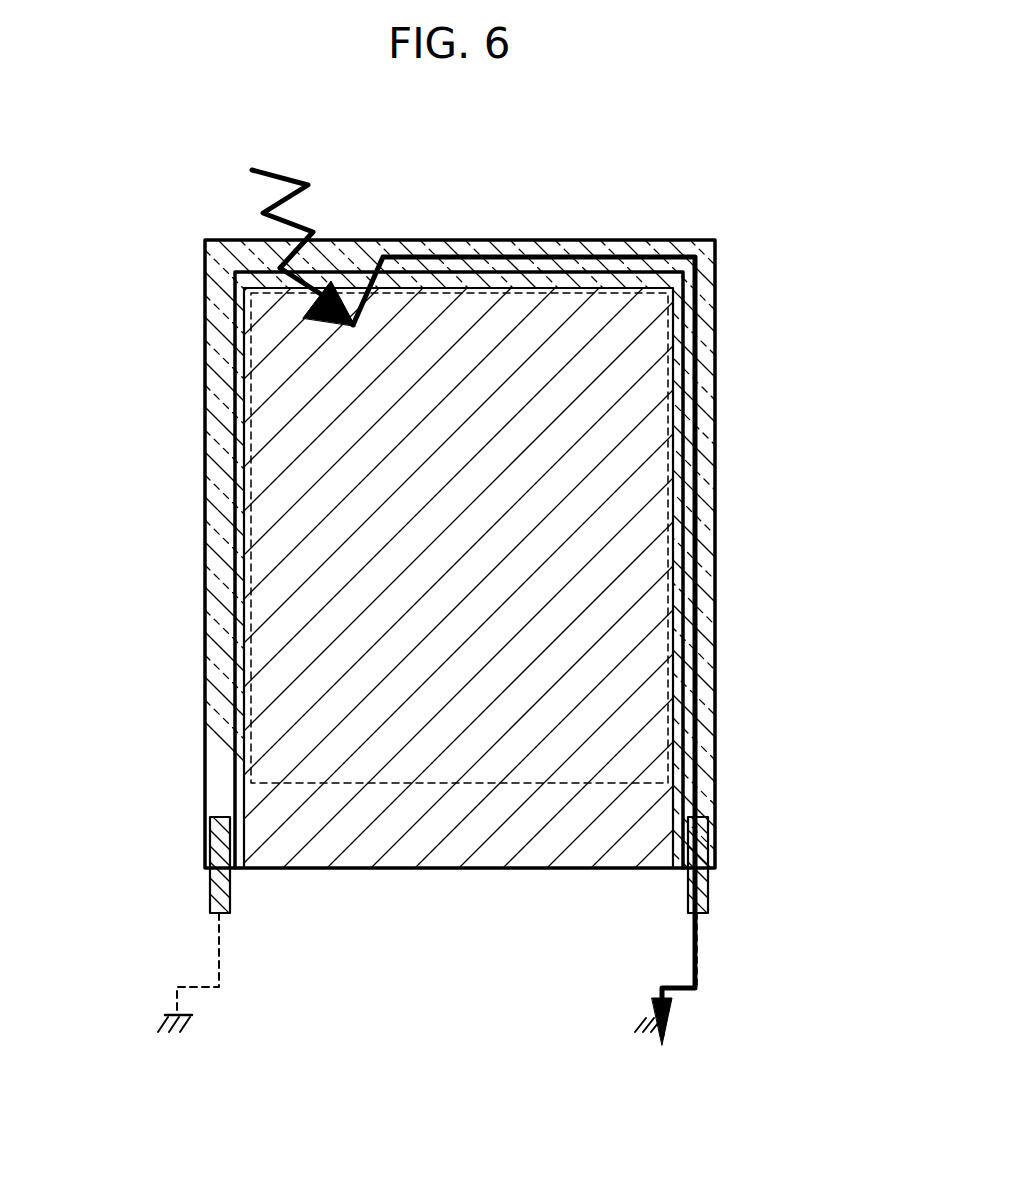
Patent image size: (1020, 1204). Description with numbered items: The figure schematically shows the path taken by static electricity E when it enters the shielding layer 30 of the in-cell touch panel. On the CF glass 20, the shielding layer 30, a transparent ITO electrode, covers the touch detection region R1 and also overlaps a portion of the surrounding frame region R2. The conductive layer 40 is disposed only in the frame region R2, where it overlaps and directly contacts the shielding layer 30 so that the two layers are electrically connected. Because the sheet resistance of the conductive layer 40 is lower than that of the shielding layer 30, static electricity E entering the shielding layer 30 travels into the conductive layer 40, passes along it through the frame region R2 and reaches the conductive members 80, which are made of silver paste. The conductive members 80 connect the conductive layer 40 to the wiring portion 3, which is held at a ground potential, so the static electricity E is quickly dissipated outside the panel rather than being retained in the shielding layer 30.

The CF glass 20 is at (180, 165).
The shielding layer 30 is at (400, 372).
The conductive layer 40 is at (715, 402).
The conductive members 80 is at (209, 890).
The wiring portion 3 is at (218, 957).
The static electricity E is at (393, 250).
The touch detection region R1 is at (506, 240).
The frame region R2 is at (637, 250).